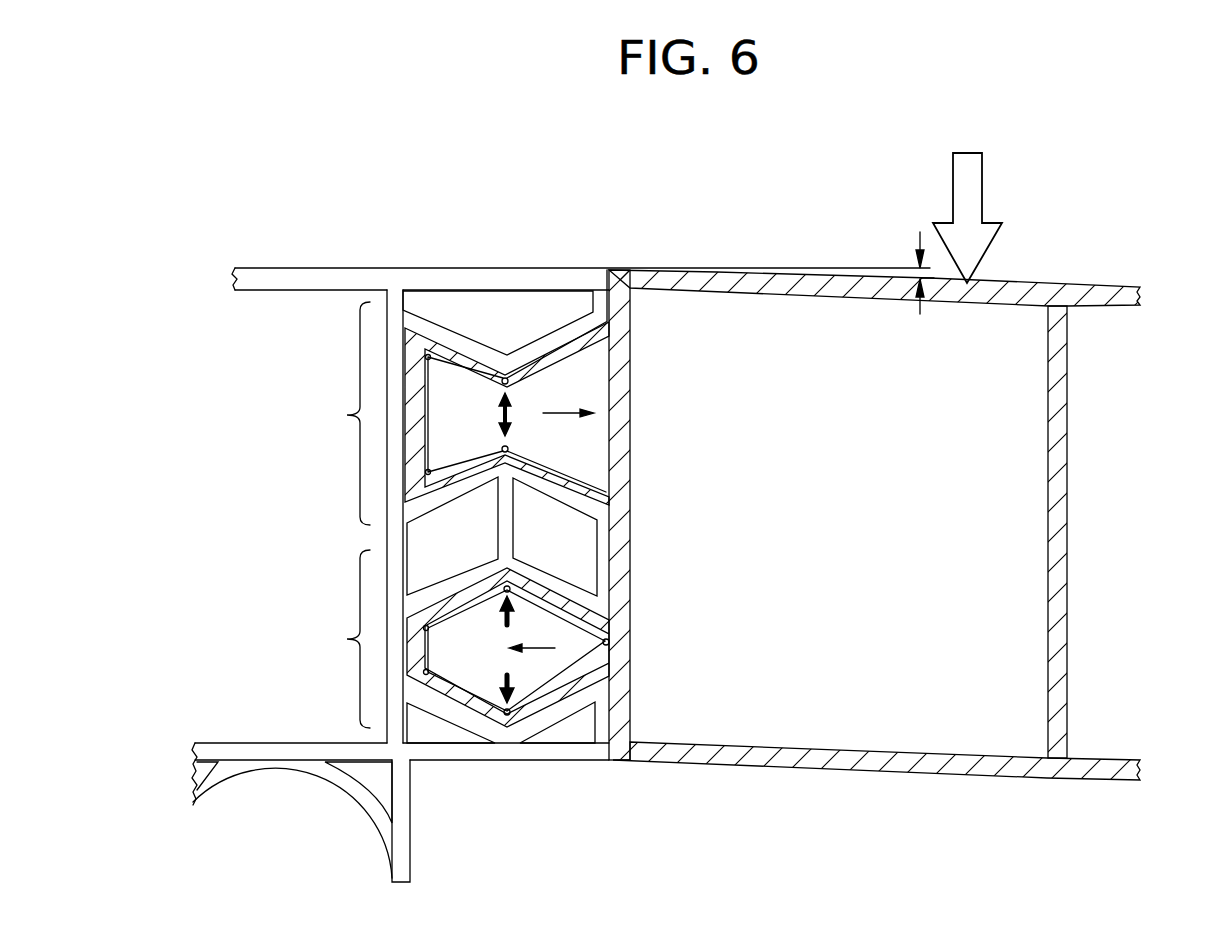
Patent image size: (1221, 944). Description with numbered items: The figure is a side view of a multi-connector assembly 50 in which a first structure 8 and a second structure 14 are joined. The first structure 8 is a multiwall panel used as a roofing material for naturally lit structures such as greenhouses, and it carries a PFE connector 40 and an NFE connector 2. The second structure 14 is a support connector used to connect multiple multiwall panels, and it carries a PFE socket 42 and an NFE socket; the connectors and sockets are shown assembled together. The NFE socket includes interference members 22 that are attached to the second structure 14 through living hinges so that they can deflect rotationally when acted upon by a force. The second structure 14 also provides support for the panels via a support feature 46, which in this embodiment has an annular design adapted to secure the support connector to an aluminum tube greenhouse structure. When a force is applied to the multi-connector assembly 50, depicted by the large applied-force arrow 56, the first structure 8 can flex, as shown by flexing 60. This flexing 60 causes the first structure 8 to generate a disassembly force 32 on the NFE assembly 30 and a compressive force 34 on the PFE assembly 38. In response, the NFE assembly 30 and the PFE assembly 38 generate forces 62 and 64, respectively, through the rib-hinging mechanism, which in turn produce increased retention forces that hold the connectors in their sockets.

The NFE connector 2 is at (456, 444).
The first structure 8 is at (667, 297).
The second structure 14 is at (326, 308).
The interference members 22 is at (529, 304).
The NFE assembly 30 is at (462, 413).
The disassembly force 32 is at (568, 430).
The compressive force 34 is at (532, 664).
The PFE assembly 38 is at (463, 646).
The PFE connector 40 is at (481, 653).
The PFE socket 42 is at (468, 554).
The support feature 46 is at (348, 820).
The multi-connector assembly 50 is at (874, 470).
The applied load 56 is at (985, 187).
The flexing 60 is at (912, 264).
The forces 62 is at (499, 414).
The forces 64 is at (511, 620).